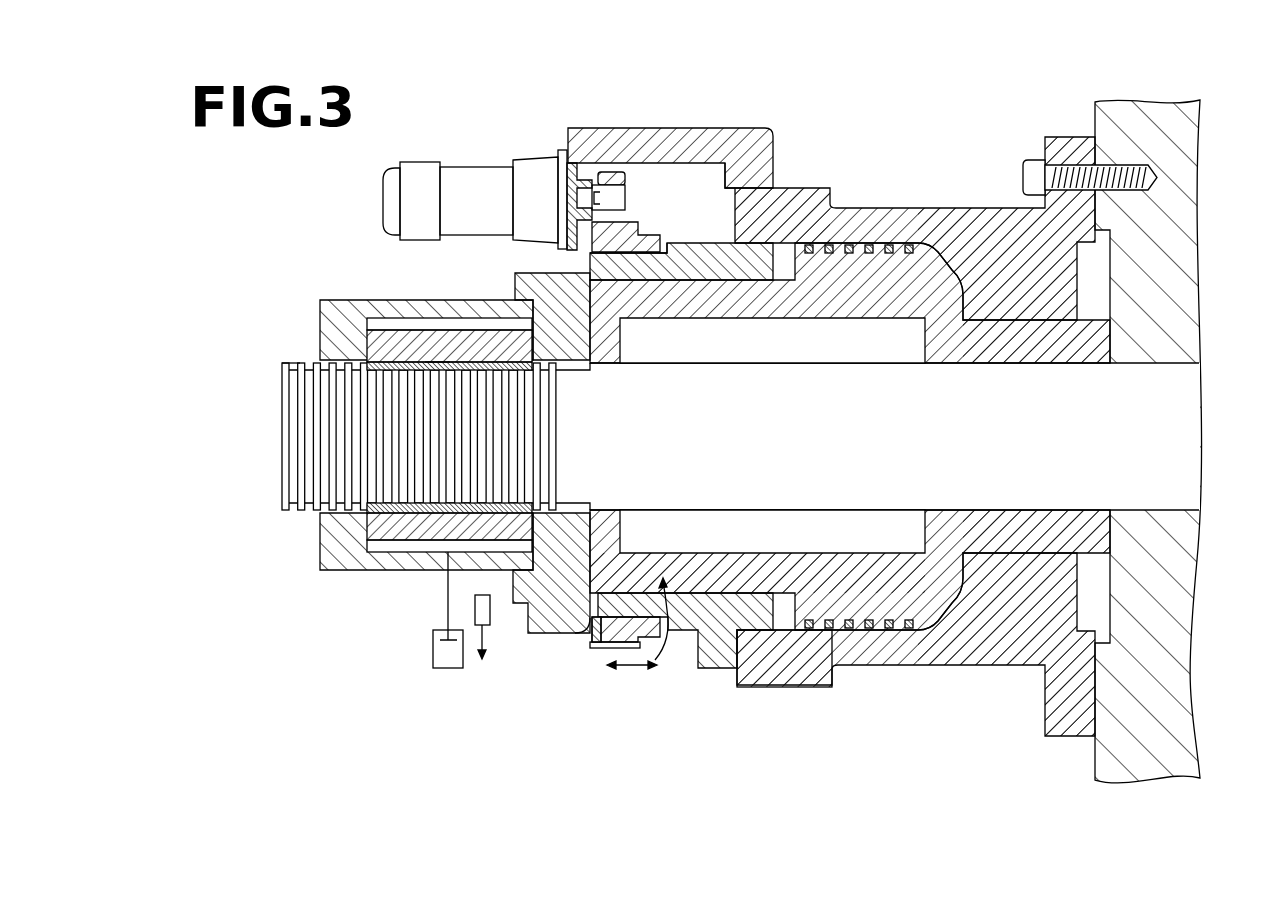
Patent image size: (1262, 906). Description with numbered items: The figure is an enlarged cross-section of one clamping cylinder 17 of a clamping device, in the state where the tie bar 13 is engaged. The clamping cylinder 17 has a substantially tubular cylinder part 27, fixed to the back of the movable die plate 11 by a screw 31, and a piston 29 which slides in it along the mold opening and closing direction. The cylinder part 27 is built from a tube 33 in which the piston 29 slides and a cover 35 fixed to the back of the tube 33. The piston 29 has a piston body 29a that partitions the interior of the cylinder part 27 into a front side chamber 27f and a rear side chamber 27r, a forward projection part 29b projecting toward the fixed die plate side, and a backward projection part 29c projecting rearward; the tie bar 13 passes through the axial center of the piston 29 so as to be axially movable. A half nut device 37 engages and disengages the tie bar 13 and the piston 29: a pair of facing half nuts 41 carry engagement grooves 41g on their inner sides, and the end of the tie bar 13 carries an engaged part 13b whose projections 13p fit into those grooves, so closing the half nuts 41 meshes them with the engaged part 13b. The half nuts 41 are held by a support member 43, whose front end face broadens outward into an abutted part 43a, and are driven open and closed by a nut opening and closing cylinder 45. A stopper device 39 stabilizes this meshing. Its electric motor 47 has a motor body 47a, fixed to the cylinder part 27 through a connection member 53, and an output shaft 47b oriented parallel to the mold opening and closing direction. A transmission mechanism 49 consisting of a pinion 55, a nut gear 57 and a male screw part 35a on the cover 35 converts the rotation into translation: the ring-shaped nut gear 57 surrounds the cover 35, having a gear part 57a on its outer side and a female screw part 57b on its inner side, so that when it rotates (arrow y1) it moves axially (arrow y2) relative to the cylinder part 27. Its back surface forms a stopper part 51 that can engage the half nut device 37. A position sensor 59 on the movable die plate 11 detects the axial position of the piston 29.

The movable die plate 11 is at (1148, 101).
The tie bar 13 is at (729, 411).
The engaged part 13b is at (290, 437).
The projections 13p is at (300, 362).
The clamping cylinder 17 is at (787, 474).
The cylinder part 27 is at (780, 453).
The front side chamber 27f is at (963, 232).
The rear side chamber 27r is at (792, 248).
The piston 29 is at (850, 506).
The piston body 29a is at (832, 630).
The forward projection part 29b is at (1000, 575).
The backward projection part 29c is at (730, 567).
The screw 31 is at (1063, 165).
The tube 33 is at (755, 648).
The cover 35 is at (619, 483).
The male screw part 35a is at (603, 265).
The half nut device 37 is at (415, 469).
The stopper device 39 is at (450, 136).
The half nuts 41 is at (449, 435).
The engagement grooves 41g is at (443, 360).
The support member 43 is at (455, 501).
The abutted part 43a is at (589, 637).
The nut opening and closing cylinder 45 is at (433, 656).
The electric motor 47 is at (516, 146).
The motor body 47a is at (498, 170).
The output shaft 47b is at (583, 198).
The transmission mechanism 49 is at (666, 174).
The stopper part 51 is at (584, 633).
The connection member 53 is at (767, 130).
The pinion 55 is at (612, 172).
The nut gear 57 is at (569, 456).
The gear part 57a is at (600, 648).
The female screw part 57b is at (588, 612).
The position sensor 59 is at (478, 625).
The arrow y1 is at (677, 650).
The arrow y2 is at (640, 667).